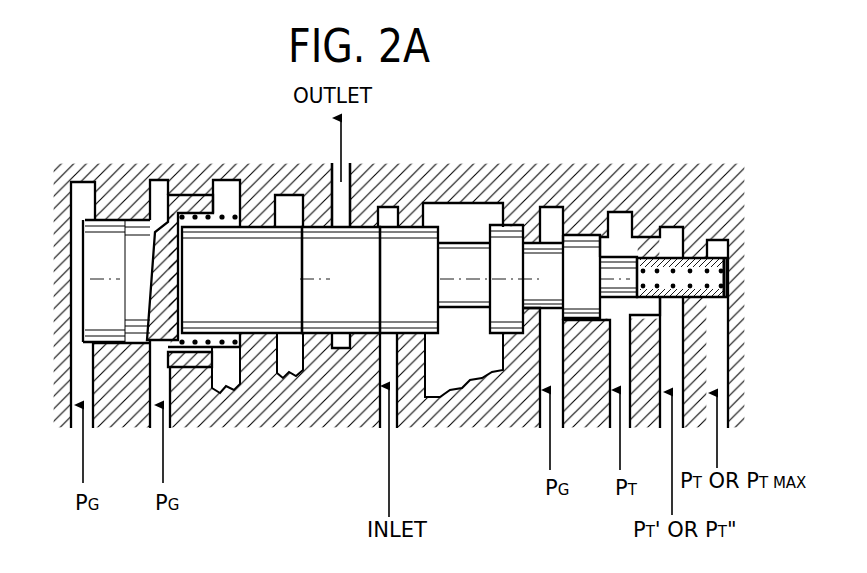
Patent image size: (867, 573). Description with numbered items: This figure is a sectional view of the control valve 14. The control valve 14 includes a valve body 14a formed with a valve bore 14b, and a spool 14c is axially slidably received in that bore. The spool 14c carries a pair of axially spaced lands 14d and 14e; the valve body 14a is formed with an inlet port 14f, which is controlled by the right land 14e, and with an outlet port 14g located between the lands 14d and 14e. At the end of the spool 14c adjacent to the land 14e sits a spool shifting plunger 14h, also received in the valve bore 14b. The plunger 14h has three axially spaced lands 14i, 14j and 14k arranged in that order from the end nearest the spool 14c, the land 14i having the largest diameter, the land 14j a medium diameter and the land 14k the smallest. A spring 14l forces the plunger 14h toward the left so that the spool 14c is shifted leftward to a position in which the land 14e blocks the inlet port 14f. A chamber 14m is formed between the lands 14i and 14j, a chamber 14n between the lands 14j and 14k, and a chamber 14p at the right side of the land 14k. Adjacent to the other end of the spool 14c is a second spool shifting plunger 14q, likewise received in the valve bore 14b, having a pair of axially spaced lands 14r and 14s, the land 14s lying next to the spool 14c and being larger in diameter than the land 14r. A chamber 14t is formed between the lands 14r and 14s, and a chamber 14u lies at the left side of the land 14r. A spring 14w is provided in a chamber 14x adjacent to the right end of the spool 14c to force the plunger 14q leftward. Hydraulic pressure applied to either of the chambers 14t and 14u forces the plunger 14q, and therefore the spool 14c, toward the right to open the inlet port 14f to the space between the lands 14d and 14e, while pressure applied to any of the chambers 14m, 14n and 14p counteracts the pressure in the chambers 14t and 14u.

The control valve 14 is at (392, 122).
The valve body 14a is at (418, 178).
The valve bore 14b is at (428, 230).
The spool 14c is at (327, 300).
The land 14d is at (247, 323).
The land 14e is at (408, 317).
The inlet port 14f is at (383, 350).
The outlet port 14g is at (332, 185).
The spool shifting plunger 14h is at (543, 250).
The land 14i is at (508, 236).
The land 14j is at (585, 247).
The land 14k is at (650, 240).
The spring 14l is at (712, 272).
The chamber 14m is at (553, 323).
The chamber 14n is at (615, 308).
The chamber 14p is at (672, 313).
The second spool shifting plunger 14q is at (140, 240).
The land 14r is at (108, 240).
The land 14s is at (188, 367).
The chamber 14t is at (142, 347).
The chamber 14u is at (77, 243).
The spring 14w is at (225, 214).
The chamber 14x is at (717, 279).